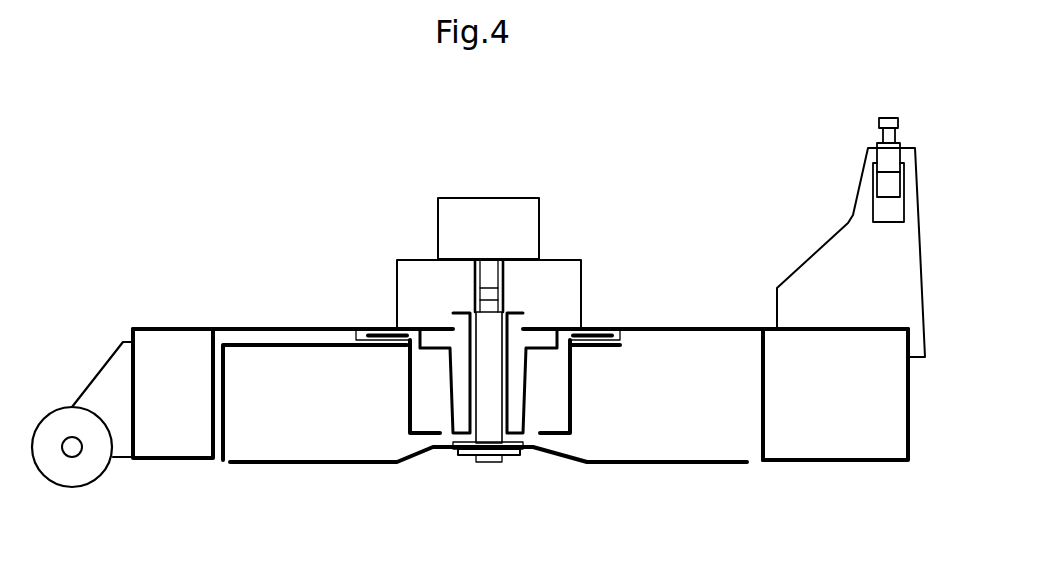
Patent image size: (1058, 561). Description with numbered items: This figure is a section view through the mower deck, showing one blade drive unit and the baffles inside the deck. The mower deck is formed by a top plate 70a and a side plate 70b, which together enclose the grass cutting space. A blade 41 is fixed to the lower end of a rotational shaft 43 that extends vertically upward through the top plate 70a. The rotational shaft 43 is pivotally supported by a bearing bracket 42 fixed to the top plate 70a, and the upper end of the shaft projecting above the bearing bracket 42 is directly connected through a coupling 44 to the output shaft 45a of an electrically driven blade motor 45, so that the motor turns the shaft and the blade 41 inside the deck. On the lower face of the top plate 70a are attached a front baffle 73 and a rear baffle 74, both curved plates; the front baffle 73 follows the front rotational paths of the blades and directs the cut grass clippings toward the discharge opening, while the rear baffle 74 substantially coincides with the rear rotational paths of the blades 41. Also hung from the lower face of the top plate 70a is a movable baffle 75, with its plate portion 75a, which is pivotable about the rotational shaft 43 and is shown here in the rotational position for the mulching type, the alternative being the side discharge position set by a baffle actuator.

The blade 41 is at (330, 464).
The bearing bracket 42 is at (528, 392).
The rotational shaft 43 is at (490, 450).
The coupling 44 is at (503, 298).
The blade motor 45 is at (486, 207).
The output shaft 45a is at (487, 273).
The top plate 70a is at (720, 328).
The side plate 70b is at (908, 383).
The front baffle 73 is at (215, 372).
The rear baffle 74 is at (762, 403).
The movable baffle 75 is at (373, 423).
The cover plate 75a is at (223, 422).